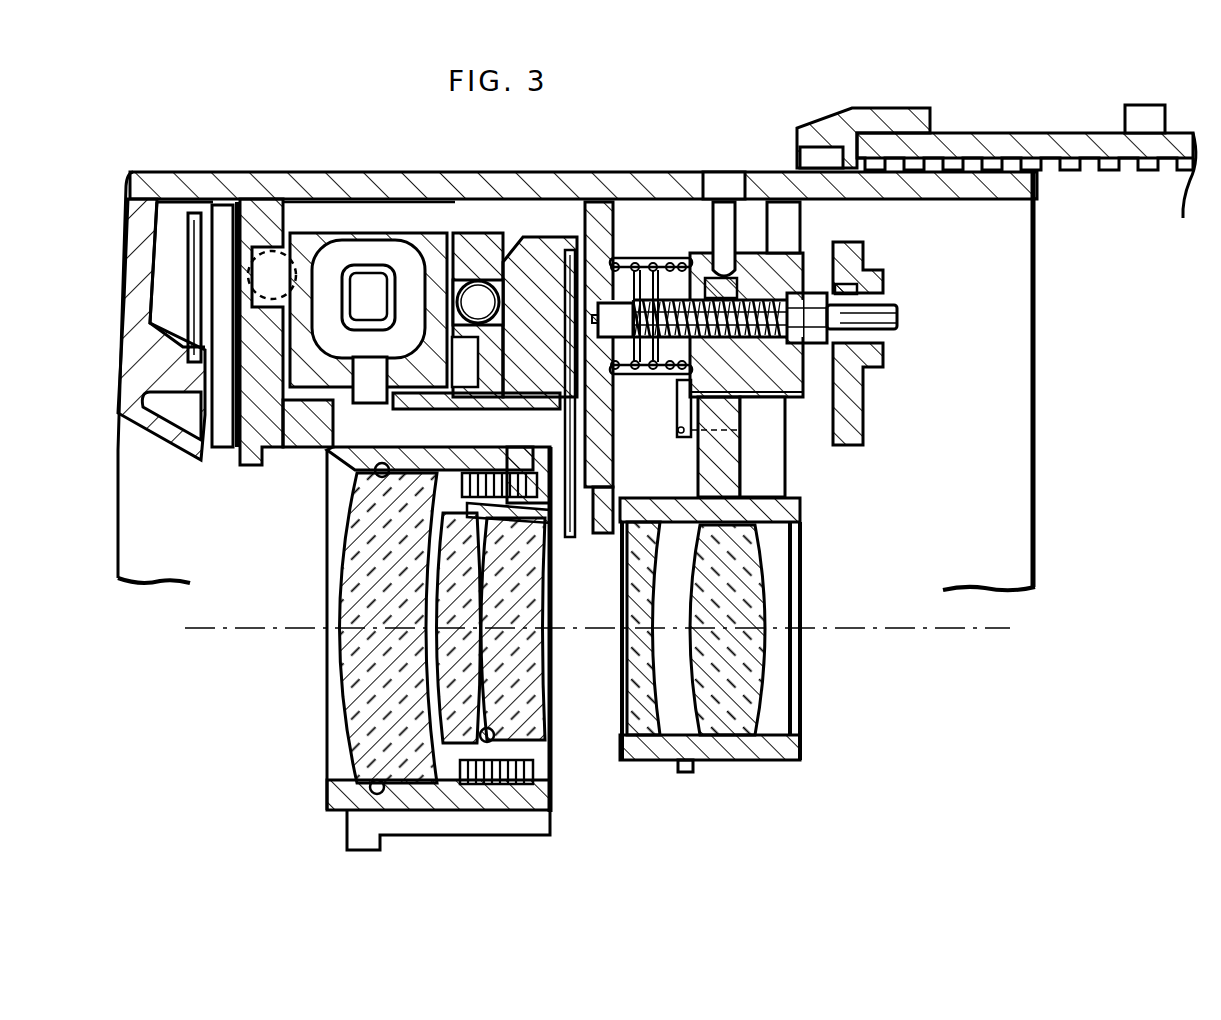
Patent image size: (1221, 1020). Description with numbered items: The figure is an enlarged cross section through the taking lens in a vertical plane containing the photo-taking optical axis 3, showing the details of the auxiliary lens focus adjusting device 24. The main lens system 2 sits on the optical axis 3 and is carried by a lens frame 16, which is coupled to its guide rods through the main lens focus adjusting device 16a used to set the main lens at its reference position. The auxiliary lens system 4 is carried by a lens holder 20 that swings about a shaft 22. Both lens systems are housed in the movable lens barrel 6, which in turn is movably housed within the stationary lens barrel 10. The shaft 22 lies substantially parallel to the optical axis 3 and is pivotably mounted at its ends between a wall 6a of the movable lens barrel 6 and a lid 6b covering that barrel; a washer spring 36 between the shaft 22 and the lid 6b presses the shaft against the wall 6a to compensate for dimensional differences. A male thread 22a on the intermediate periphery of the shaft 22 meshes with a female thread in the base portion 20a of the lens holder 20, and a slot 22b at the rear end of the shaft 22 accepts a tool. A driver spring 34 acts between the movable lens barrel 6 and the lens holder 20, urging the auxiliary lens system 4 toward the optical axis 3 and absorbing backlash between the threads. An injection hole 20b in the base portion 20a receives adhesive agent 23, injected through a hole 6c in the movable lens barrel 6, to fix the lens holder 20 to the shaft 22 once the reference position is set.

The main lens system 2 is at (330, 744).
The photo-taking optical axis 3 is at (216, 632).
The auxiliary lens system 4 is at (817, 678).
The movable lens barrel 6 is at (340, 182).
The wall 6a is at (603, 512).
The lid 6b is at (858, 412).
The hole 6c is at (722, 182).
The stationary lens barrel 10 is at (997, 140).
The lens frame 16 is at (496, 820).
The main lens focus adjusting device 16a is at (433, 225).
The lens holder 20 is at (733, 762).
The base portion 20a is at (787, 402).
The injection hole 20b is at (712, 262).
The shaft 22 is at (885, 350).
The male thread 22a is at (677, 400).
The slot 22b is at (905, 320).
The adhesive agent 23 is at (705, 282).
The auxiliary lens focus adjusting device 24 is at (755, 243).
The driver spring 34 is at (633, 268).
The washer spring 36 is at (857, 288).